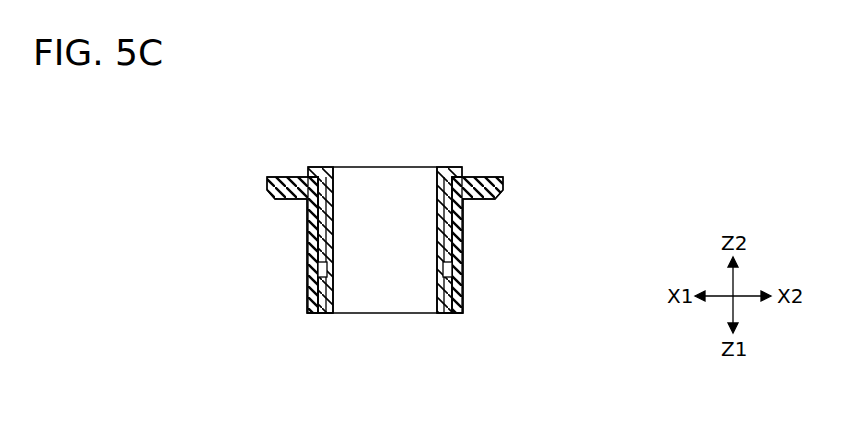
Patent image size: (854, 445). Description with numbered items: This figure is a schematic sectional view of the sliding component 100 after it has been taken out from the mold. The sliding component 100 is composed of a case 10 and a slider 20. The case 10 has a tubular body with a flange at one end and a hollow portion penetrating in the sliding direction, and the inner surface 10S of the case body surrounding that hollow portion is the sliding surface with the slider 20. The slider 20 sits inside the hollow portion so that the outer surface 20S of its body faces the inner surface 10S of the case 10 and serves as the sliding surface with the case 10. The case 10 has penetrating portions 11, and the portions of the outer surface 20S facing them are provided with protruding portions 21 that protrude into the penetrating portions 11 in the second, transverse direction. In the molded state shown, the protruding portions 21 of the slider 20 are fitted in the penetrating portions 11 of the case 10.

The sliding component 100 is at (300, 128).
The case 10 is at (268, 188).
The inner surface 10S is at (331, 200).
The penetrating portions 11 is at (310, 249).
The slider 20 is at (320, 166).
The outer surface 20S is at (464, 173).
The protruding portions 21 is at (327, 266).